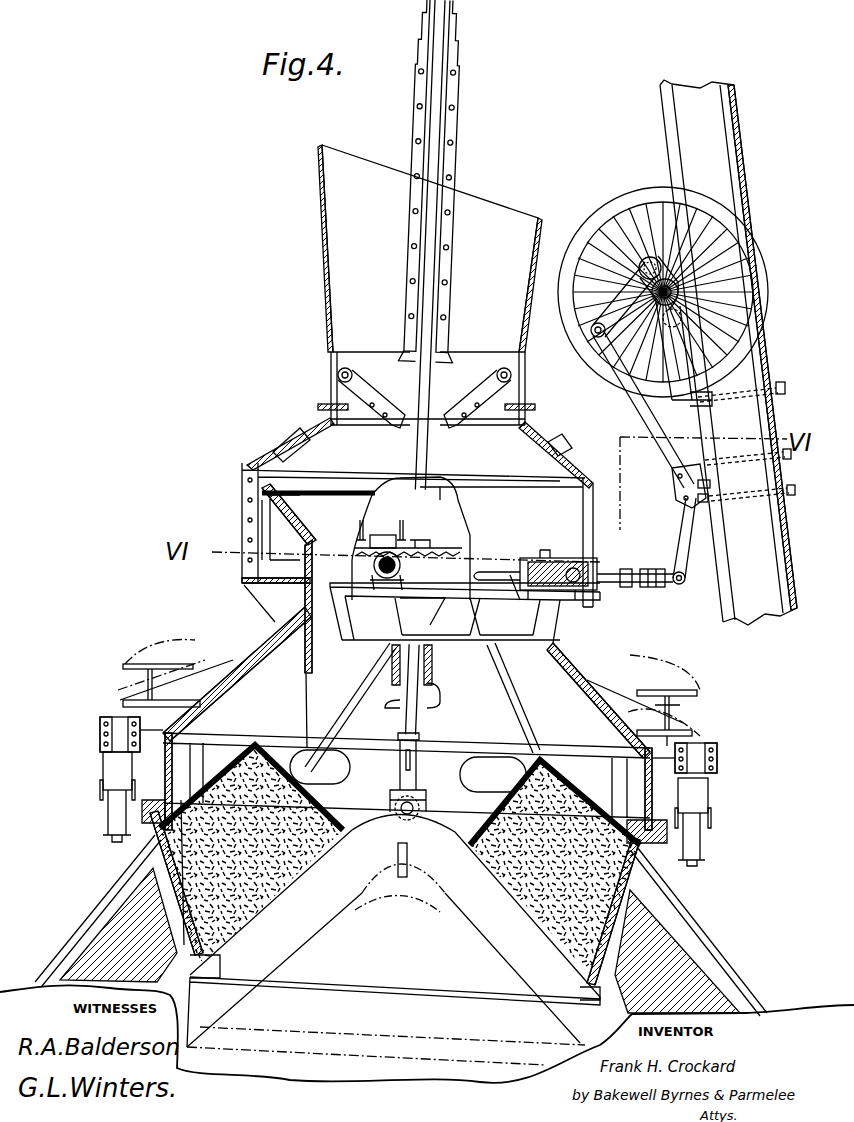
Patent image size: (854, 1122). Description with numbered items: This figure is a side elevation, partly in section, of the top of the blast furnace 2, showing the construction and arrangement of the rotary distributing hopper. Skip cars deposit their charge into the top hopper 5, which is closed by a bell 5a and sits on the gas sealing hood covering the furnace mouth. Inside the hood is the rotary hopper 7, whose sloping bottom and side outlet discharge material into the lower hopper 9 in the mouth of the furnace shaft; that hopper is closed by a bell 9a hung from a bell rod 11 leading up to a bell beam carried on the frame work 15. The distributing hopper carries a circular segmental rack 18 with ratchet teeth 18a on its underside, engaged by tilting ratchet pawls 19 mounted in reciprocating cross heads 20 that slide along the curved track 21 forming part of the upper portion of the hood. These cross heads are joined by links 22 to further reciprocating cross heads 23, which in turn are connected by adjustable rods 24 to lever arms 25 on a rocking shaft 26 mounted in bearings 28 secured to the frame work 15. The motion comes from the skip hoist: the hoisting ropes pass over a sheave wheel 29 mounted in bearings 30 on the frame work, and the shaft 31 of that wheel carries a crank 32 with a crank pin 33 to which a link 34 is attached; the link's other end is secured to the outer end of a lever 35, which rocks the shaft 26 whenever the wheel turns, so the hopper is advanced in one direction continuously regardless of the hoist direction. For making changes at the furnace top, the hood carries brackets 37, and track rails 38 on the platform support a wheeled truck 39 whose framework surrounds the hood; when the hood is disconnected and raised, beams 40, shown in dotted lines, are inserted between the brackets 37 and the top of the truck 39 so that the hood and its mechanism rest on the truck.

The blast furnace 2 is at (393, 1021).
The top hopper 5 is at (430, 285).
The closing bell 5a is at (408, 396).
The rotary hopper 7 is at (417, 605).
The lower hopper 9 is at (200, 923).
The closing bell 9a is at (393, 930).
The bell rod 11 is at (447, 453).
The frame work 15 is at (728, 352).
The circular segmental rack 18 is at (385, 542).
The ratchet teeth 18a is at (367, 545).
The tilting ratchet pawl 19 is at (412, 555).
The reciprocating cross head 20 is at (394, 585).
The curved track 21 is at (465, 609).
The link or rod 22 is at (490, 571).
The reciprocating cross head 23 is at (558, 560).
The adjustable link or rod 24 is at (613, 584).
The lever arm 25 is at (680, 537).
The rocking shaft 26 is at (682, 486).
The bearing 28 is at (710, 492).
The sheave wheel 29 is at (598, 370).
The bearing 30 is at (676, 334).
The shaft 31 is at (672, 293).
The crank 32 is at (664, 281).
The crank pin 33 is at (658, 265).
The link 34 is at (600, 322).
The lever 35 is at (643, 414).
The bracket 37 is at (178, 656).
The track rail 38 is at (112, 830).
The wheeled truck 39 is at (100, 733).
The beam 40 is at (672, 712).